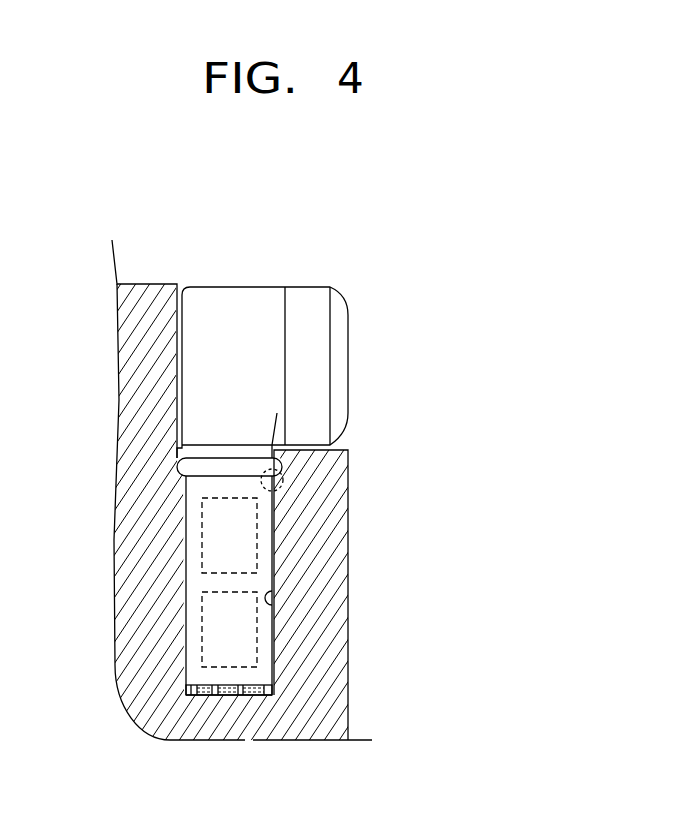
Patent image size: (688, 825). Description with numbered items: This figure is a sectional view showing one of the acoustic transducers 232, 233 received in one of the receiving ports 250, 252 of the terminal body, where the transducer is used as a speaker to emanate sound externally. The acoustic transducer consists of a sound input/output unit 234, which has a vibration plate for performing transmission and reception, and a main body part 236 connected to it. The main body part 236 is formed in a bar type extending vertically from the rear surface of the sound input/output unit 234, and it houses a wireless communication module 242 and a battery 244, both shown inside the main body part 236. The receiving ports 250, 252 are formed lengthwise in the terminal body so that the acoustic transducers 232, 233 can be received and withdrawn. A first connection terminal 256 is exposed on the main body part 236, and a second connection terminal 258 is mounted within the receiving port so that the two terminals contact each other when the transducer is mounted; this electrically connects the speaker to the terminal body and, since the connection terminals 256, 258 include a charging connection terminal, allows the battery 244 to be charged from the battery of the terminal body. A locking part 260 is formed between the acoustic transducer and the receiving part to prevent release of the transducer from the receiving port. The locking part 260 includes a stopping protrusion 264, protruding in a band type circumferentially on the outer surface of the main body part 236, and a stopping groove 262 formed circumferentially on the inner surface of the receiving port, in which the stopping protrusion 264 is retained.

The first acoustic transducer 232 is at (365, 324).
The second acoustic transducer 233 is at (338, 372).
The sound input/output unit 234 is at (235, 317).
The main body part 236 is at (275, 528).
The wireless communication module 242 is at (200, 527).
The battery 244 is at (200, 619).
The first receiving port 250 is at (367, 604).
The second receiving port 252 is at (277, 598).
The first connection terminal 256 is at (187, 689).
The second connection terminal 258 is at (188, 694).
The locking part 260 is at (337, 461).
The stopping groove 262 is at (280, 491).
The stopping protrusion 264 is at (276, 453).